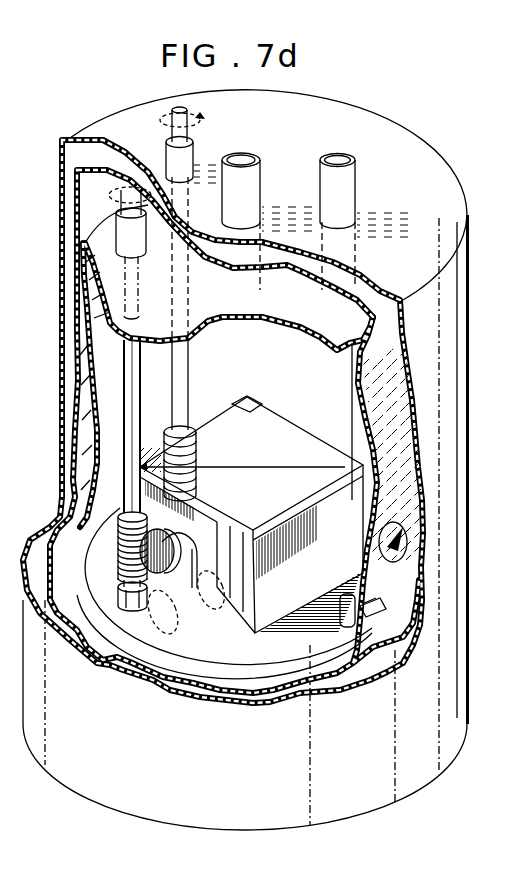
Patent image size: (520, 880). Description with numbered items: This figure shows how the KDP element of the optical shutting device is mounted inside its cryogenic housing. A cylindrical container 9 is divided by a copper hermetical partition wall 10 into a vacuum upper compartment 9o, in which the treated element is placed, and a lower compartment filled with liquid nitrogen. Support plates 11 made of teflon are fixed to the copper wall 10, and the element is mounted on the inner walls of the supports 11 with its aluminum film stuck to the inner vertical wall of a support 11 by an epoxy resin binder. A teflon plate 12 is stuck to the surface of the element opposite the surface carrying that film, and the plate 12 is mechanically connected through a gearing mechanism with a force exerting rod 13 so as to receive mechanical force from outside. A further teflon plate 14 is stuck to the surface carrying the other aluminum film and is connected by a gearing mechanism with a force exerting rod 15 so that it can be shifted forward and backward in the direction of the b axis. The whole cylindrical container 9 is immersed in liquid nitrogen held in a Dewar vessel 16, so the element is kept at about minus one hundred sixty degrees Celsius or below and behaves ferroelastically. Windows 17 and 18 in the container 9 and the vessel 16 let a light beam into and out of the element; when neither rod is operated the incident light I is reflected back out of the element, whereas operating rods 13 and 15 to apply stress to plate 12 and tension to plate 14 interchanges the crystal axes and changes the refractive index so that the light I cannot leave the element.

The cylindrical container 9 is at (403, 510).
The vacuum upper compartment 9o is at (357, 427).
The copper hermetical partition wall 10 is at (321, 640).
The support plates 11 is at (251, 521).
The teflon plate 12 is at (209, 428).
The force exerting rod 13 is at (200, 115).
The teflon plate 14 is at (219, 517).
The force exerting rod 15 is at (118, 192).
The Dewar vessel 16 is at (62, 435).
The window 17 is at (400, 562).
The window 18 is at (238, 568).
The incident light I is at (405, 533).